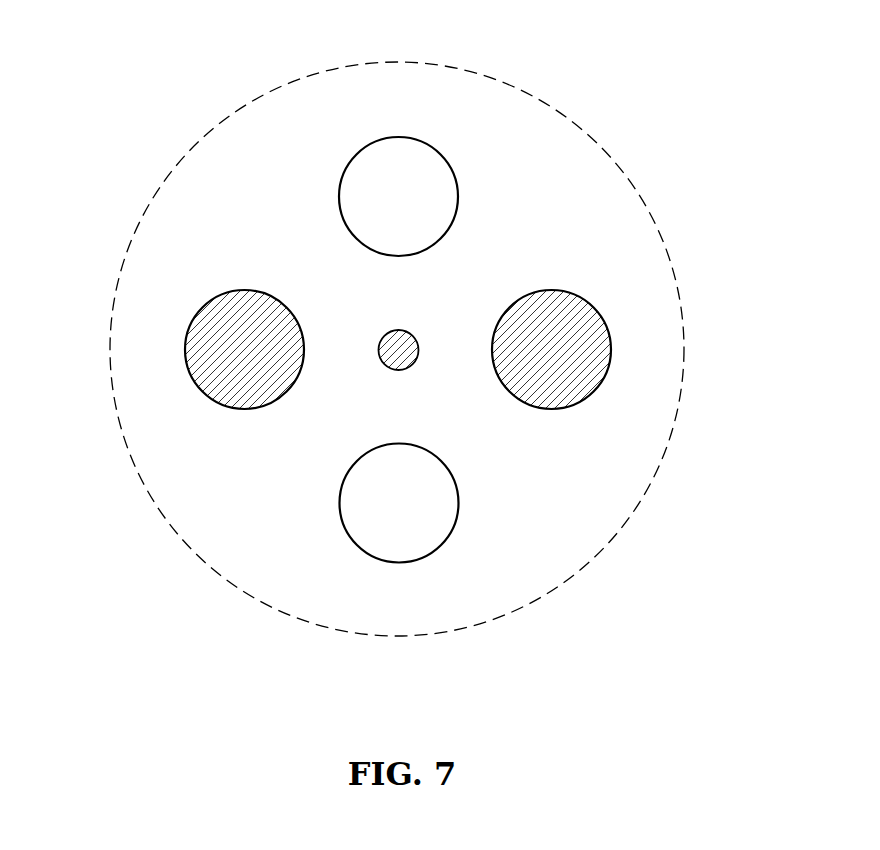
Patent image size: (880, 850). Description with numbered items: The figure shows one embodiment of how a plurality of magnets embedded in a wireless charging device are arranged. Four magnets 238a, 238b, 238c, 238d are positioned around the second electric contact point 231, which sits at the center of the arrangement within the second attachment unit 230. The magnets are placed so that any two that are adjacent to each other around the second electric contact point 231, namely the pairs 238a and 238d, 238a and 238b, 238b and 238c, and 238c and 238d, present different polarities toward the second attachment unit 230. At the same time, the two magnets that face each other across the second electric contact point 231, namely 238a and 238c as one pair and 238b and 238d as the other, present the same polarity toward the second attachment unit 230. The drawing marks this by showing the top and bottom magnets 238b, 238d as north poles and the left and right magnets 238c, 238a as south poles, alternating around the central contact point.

The second attachment unit 230 is at (300, 77).
The second electric contact point 231 is at (405, 331).
The magnet 238a is at (611, 350).
The magnet 238b is at (399, 137).
The magnet 238c is at (185, 349).
The magnet 238d is at (397, 563).